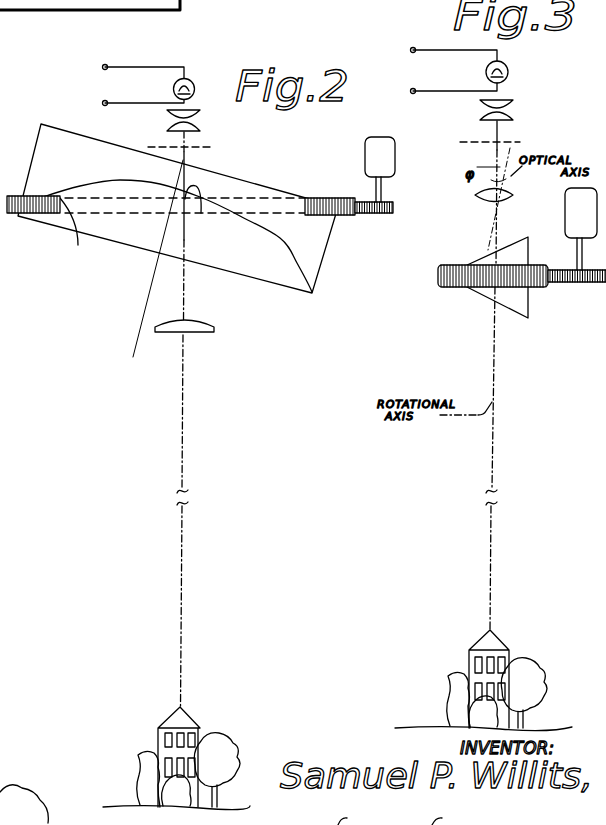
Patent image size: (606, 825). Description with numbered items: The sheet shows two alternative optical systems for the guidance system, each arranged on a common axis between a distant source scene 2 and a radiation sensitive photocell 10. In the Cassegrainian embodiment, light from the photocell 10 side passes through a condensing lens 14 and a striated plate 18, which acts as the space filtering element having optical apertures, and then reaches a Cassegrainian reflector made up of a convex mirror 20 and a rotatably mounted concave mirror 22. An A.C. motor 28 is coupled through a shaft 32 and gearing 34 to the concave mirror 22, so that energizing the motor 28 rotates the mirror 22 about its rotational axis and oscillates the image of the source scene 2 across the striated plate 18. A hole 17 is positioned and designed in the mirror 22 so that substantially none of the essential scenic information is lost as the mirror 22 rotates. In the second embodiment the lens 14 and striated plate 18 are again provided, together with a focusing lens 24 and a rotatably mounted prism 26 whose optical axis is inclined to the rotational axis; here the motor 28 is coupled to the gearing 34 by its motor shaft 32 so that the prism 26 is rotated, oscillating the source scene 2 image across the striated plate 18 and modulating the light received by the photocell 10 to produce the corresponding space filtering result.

In FIG. 2, the source scene 2 is at (148, 740).
In FIG. 3, the source scene 2 is at (455, 659).
In FIG. 2, the photocell 10 is at (194, 86).
In FIG. 3, the photocell 10 is at (507, 68).
In FIG. 2, the condensing lens 14 is at (202, 121).
In FIG. 3, the condensing lens 14 is at (515, 108).
In FIG. 2, the hole 17 is at (201, 213).
In FIG. 2, the striated plate 18 is at (215, 147).
In FIG. 3, the striated plate 18 is at (523, 141).
In FIG. 2, the convex mirror 20 is at (207, 325).
In FIG. 2, the concave mirror 22 is at (78, 245).
In FIG. 3, the focusing lens 24 is at (510, 193).
In FIG. 3, the prism 26 is at (523, 305).
In FIG. 2, the A.C. motor 28 is at (365, 158).
In FIG. 3, the A.C. motor 28 is at (570, 203).
In FIG. 2, the shaft 32 is at (384, 186).
In FIG. 3, the shaft 32 is at (577, 247).
In FIG. 2, the gearing 34 is at (356, 220).
In FIG. 3, the gearing 34 is at (556, 286).